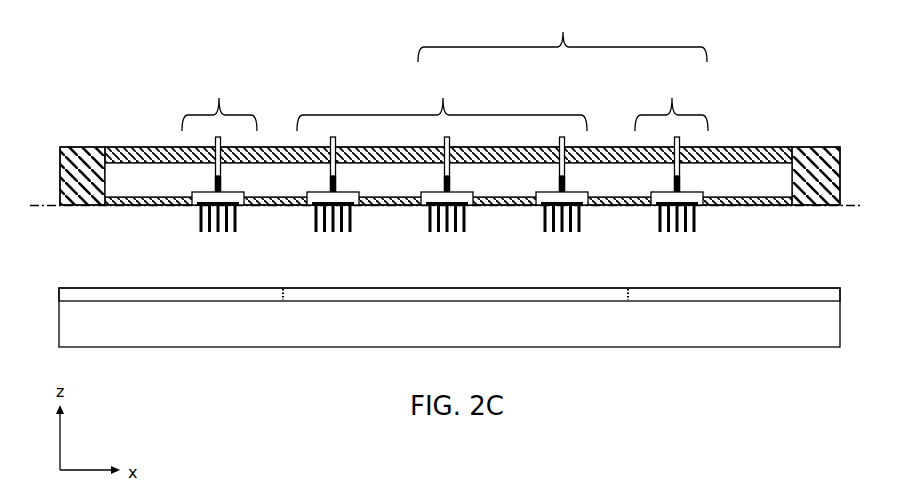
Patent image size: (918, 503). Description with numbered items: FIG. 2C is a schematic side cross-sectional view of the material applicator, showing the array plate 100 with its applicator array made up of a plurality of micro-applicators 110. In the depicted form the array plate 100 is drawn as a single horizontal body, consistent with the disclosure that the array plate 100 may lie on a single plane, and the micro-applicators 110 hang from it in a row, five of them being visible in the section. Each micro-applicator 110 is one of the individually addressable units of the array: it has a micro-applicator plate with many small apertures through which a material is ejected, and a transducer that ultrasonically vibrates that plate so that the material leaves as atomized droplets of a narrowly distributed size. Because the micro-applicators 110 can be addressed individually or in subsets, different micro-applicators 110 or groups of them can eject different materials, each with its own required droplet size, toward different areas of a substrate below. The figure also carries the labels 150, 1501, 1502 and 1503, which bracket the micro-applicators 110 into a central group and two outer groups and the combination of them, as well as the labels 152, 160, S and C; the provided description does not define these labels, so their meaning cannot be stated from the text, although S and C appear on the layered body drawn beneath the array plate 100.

The array plate 100 is at (786, 209).
The micro-applicator 110 is at (187, 226).
The module groups 150 is at (445, 65).
The central module group 1501 is at (442, 100).
The outer module group 1502 is at (445, 100).
The combined module group 1503 is at (562, 31).
The reference plane 152 is at (33, 205).
The pin / shaft 160 is at (683, 146).
The substrate S is at (457, 334).
The coating layer C is at (110, 292).